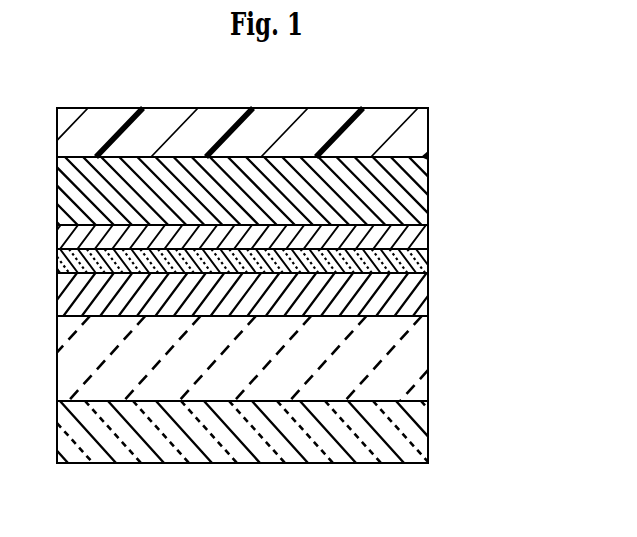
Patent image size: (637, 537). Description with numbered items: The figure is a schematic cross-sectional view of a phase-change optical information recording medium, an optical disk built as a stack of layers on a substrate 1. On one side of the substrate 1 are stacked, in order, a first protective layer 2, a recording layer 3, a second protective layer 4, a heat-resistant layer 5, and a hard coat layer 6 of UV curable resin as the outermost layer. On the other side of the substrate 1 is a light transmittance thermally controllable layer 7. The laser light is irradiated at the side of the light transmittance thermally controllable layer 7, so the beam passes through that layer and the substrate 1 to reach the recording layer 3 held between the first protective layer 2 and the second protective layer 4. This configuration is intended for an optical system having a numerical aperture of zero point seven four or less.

The substrate 1 is at (402, 363).
The first protective layer 2 is at (403, 300).
The recording layer 3 is at (408, 260).
The second protective layer 4 is at (415, 237).
The heat-resistant layer 5 is at (402, 193).
The hard coat layer 6 is at (403, 132).
The light transmittance thermally controllable layer 7 is at (403, 428).